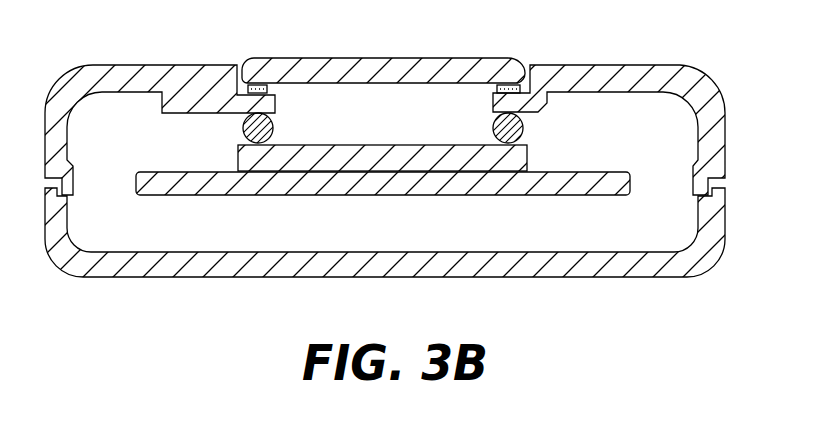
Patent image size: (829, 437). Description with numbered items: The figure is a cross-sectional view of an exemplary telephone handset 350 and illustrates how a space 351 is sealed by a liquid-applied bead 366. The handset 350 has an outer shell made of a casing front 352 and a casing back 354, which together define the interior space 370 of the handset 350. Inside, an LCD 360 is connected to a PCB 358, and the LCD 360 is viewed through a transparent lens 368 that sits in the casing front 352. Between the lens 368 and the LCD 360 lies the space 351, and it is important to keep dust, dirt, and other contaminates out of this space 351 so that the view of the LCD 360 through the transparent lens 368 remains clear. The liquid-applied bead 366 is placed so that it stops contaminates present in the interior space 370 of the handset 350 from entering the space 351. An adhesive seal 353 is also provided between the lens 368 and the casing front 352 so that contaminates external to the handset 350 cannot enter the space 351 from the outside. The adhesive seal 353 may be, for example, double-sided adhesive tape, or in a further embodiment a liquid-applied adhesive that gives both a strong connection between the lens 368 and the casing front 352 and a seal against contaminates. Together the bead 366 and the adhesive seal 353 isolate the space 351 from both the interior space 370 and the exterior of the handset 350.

The telephone handset 350 is at (243, 327).
The space 351 is at (435, 122).
The casing front 352 is at (672, 80).
The adhesive seal 353 is at (262, 90).
The casing back 354 is at (633, 263).
The PCB 358 is at (158, 183).
The LCD 360 is at (365, 158).
The liquid-applied bead 366 is at (250, 113).
The transparent lens 368 is at (355, 72).
The interior space 370 is at (228, 230).